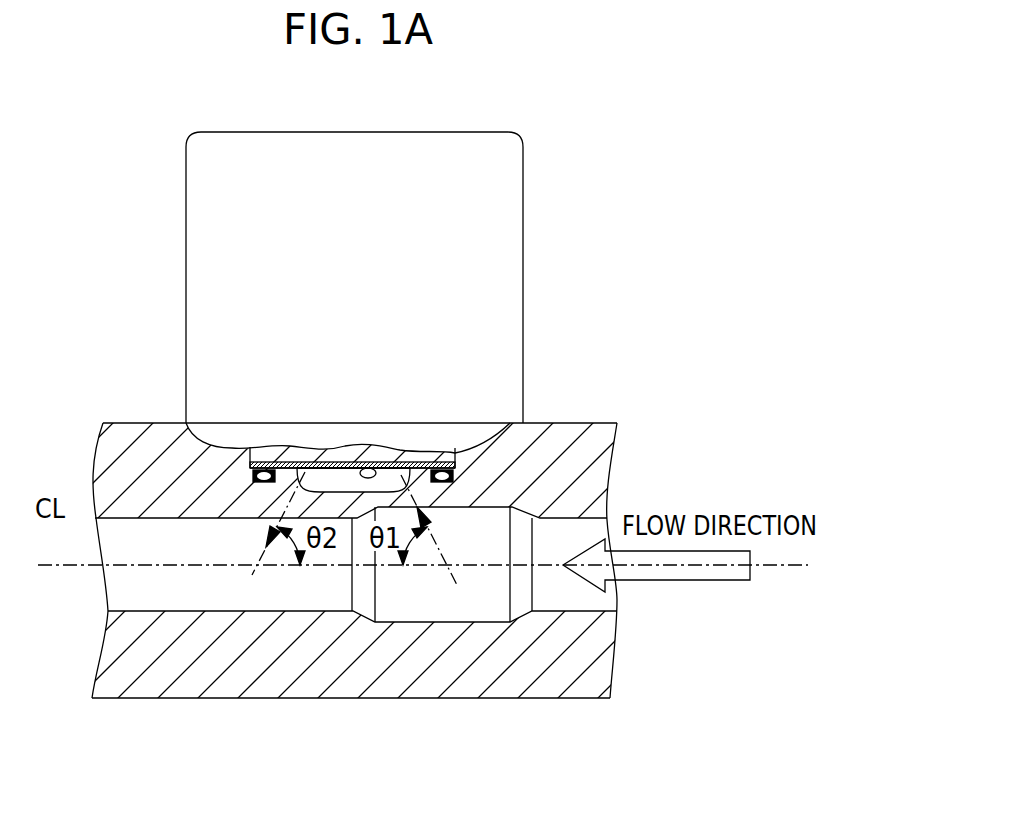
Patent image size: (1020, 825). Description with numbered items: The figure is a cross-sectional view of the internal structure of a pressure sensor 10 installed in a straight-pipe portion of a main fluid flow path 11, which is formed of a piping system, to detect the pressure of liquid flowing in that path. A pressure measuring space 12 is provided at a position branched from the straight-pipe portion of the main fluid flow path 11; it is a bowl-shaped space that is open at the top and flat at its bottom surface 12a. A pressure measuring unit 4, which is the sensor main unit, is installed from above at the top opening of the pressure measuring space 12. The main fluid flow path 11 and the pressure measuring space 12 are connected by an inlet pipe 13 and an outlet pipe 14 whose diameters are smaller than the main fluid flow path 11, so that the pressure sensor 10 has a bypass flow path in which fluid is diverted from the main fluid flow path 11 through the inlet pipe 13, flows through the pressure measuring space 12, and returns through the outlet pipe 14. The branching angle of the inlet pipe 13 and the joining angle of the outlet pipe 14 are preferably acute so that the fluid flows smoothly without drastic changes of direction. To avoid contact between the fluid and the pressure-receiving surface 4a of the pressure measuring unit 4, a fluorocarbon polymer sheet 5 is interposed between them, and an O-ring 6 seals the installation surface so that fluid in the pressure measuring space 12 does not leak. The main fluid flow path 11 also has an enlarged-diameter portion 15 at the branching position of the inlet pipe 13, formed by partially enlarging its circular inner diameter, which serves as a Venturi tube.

The pressure sensor 10 is at (605, 123).
The pressure measuring unit 4 is at (523, 241).
The pressure-receiving surface 4a is at (381, 480).
The fluorocarbon polymer (PFA) sheet 5 is at (251, 468).
The O-ring 6 is at (261, 469).
The main fluid flow path 11 is at (448, 538).
The pressure measuring space 12 is at (327, 480).
The bottom surface 12a is at (350, 472).
The inlet pipe 13 is at (424, 470).
The outlet pipe 14 is at (286, 462).
The enlarged-diameter portion 15 is at (494, 528).